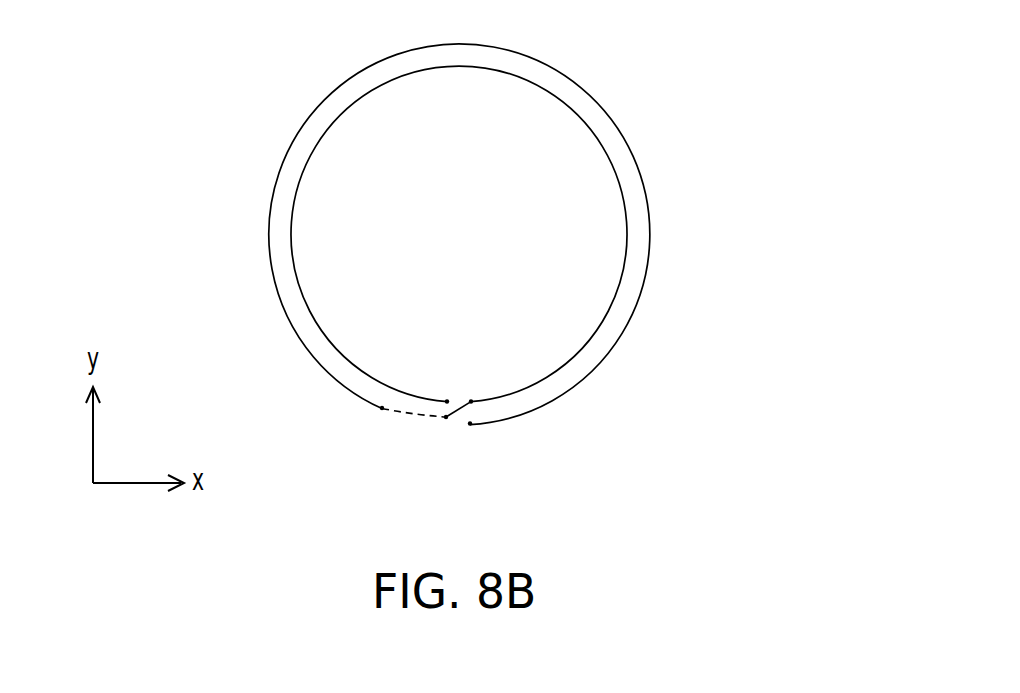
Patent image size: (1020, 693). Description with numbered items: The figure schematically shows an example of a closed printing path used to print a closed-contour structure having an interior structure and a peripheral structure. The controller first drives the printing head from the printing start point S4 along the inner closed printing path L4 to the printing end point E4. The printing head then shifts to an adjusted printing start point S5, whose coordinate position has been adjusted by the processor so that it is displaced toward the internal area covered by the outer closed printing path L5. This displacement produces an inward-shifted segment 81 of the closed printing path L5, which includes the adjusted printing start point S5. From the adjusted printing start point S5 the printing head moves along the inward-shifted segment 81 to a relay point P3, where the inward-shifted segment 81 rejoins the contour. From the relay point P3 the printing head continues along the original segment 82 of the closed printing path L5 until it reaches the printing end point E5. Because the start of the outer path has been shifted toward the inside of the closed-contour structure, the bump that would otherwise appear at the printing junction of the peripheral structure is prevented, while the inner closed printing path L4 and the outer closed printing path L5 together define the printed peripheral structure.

The original segment 82 is at (492, 234).
The closed printing path L5 is at (645, 282).
The closed printing path L4 is at (605, 320).
The inward-shifted segment 81 is at (417, 413).
The relay point P3 is at (382, 408).
The printing start point S4 is at (447, 401).
The printing end point E4 is at (471, 401).
The adjusted printing start point S5 is at (446, 417).
The printing end point E5 is at (470, 424).